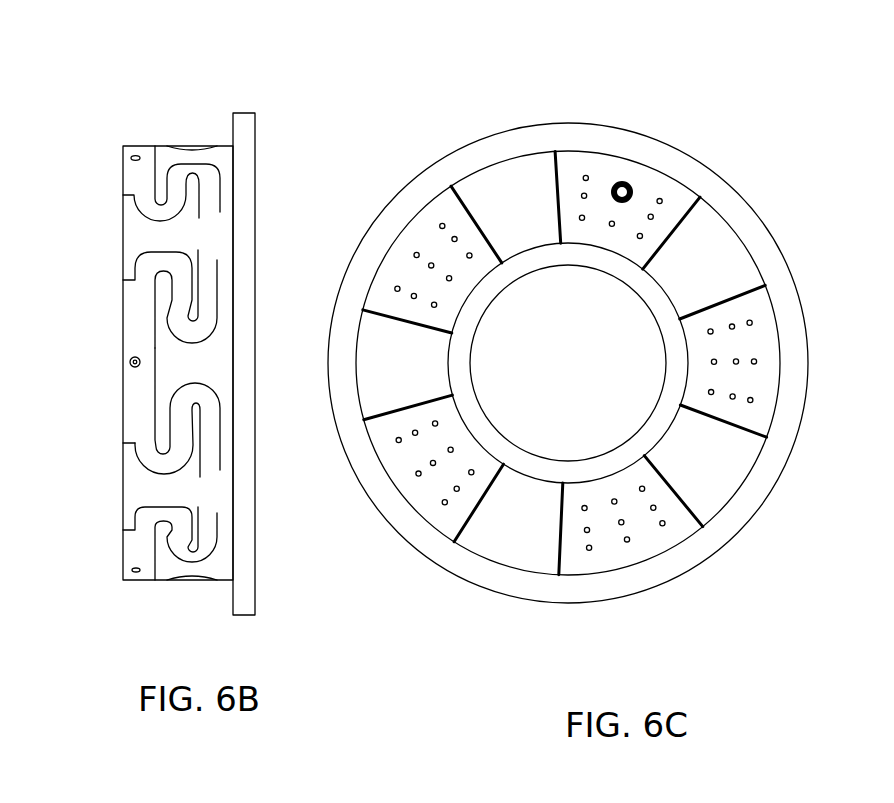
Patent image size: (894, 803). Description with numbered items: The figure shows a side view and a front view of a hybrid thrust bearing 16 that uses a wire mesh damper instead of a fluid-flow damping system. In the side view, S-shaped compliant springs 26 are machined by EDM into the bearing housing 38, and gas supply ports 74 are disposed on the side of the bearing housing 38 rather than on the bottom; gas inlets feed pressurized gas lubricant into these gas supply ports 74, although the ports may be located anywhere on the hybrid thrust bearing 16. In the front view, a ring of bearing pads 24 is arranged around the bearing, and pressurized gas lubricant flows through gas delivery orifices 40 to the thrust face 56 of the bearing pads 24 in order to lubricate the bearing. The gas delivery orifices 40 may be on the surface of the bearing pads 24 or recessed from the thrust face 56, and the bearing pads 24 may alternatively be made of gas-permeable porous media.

In FIG. 6B, the hybrid thrust bearing 16 is at (296, 60).
In FIG. 6C, the hybrid thrust bearing 16 is at (763, 102).
In FIG. 6B, the bearing pad 24 is at (122, 318).
In FIG. 6C, the bearing pad 24 is at (573, 543).
In FIG. 6B, the S-shaped compliant spring 26 is at (182, 183).
In FIG. 6B, the bearing housing 38 is at (140, 238).
In FIG. 6C, the gas delivery orifice 40 is at (623, 182).
In FIG. 6B, the thrust face 56 is at (121, 453).
In FIG. 6C, the thrust face 56 is at (738, 361).
In FIG. 6B, the gas supply port 74 is at (136, 155).